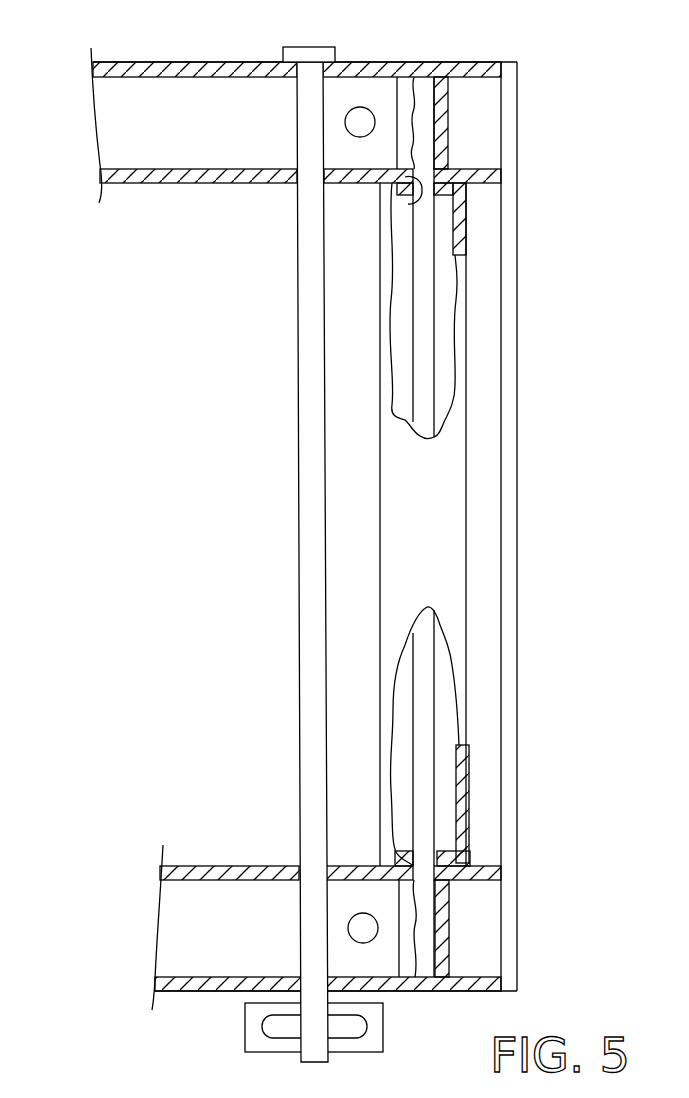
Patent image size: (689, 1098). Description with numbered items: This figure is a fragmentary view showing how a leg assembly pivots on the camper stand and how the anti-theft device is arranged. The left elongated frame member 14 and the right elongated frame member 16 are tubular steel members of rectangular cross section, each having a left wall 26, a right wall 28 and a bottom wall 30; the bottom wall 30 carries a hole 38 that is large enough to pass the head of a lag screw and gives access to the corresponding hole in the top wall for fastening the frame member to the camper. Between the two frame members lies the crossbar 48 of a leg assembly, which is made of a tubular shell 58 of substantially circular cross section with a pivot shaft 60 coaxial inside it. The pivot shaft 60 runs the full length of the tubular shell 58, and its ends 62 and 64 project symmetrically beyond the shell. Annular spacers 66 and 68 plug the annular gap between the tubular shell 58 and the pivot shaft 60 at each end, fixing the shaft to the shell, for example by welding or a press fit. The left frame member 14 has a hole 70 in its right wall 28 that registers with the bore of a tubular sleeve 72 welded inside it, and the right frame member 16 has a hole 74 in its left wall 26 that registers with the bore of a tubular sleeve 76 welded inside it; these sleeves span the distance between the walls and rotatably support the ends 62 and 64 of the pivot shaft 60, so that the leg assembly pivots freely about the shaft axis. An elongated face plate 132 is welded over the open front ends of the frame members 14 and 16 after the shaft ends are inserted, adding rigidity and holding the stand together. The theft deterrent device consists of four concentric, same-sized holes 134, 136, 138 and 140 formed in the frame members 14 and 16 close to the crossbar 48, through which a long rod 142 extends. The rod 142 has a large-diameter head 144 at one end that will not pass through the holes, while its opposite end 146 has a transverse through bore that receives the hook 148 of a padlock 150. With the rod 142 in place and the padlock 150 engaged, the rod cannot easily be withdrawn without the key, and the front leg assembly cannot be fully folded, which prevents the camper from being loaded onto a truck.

The left elongated frame member 14 is at (114, 200).
The right elongated frame member 16 is at (171, 835).
The left wall 26 is at (150, 64).
The right wall 28 is at (165, 181).
The bottom wall 30 is at (177, 128).
The hole 38 is at (346, 118).
The crossbar 48 is at (478, 498).
The tubular shell 58 is at (463, 742).
The pivot shaft 60 is at (425, 658).
The end of pivot shaft 62 is at (447, 92).
The end of pivot shaft 64 is at (425, 955).
The annular spacer 66 is at (463, 185).
The annular spacer 68 is at (470, 851).
The hole 70 is at (405, 208).
The tubular sleeve 72 is at (447, 130).
The hole 74 is at (423, 862).
The tubular sleeve 76 is at (447, 905).
The elongated face plate 132 is at (512, 350).
The hole 134 is at (297, 70).
The hole 136 is at (300, 176).
The hole 138 is at (300, 866).
The hole 140 is at (297, 983).
The rod 142 is at (312, 542).
The head 144 is at (335, 50).
The end of rod 146 is at (300, 1055).
The hook 148 is at (355, 1027).
The padlock 150 is at (250, 1035).